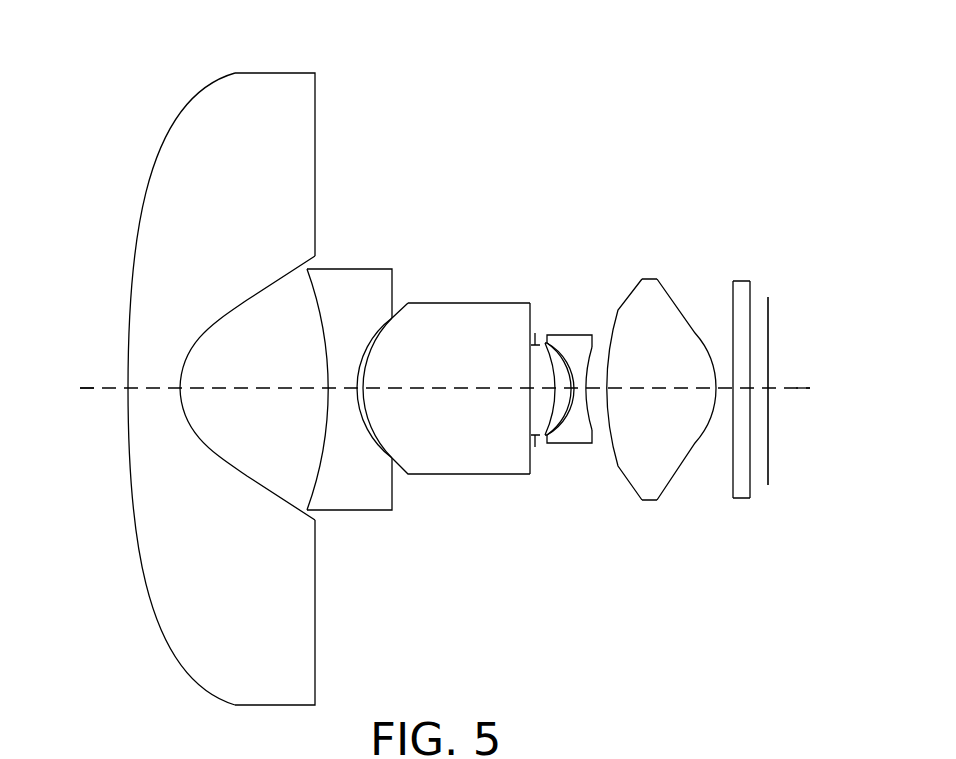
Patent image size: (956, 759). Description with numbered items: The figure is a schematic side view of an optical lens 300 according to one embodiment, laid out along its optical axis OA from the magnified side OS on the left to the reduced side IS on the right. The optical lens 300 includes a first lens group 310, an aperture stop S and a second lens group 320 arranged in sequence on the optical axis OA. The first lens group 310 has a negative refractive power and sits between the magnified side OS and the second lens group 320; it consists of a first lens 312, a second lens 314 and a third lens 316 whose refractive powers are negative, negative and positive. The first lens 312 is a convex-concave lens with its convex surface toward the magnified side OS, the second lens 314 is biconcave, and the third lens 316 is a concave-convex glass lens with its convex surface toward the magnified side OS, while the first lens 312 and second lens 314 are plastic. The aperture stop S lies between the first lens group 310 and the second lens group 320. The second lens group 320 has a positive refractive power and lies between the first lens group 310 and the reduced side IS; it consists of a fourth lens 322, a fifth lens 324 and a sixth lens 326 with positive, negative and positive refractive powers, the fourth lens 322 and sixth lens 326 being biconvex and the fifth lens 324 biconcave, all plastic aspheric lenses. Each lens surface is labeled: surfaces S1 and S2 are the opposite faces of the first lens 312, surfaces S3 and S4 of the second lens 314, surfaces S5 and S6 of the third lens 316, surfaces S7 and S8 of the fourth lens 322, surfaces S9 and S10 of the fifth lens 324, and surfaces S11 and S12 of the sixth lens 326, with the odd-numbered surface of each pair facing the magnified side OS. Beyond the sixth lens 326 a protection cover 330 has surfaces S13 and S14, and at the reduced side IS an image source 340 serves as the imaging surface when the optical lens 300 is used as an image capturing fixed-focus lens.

The optical lens 300 is at (835, 718).
The first lens group 310 is at (483, 650).
The first lens 312 is at (280, 567).
The second lens 314 is at (346, 494).
The third lens 316 is at (452, 458).
The second lens group 320 is at (665, 650).
The fourth lens 322 is at (547, 413).
The fifth lens 324 is at (578, 437).
The sixth lens 326 is at (653, 495).
The protection cover 330 is at (740, 492).
The image source 340 is at (768, 473).
The aperture stop S is at (533, 446).
The magnified side OS is at (73, 389).
The reduced side IS is at (816, 389).
The optical axis OA is at (93, 390).
The surface S1 is at (160, 151).
The surface S2 is at (252, 304).
The surface S3 is at (326, 366).
The surface S4 is at (368, 343).
The surface S5 is at (362, 380).
The surface S6 is at (533, 314).
The surface S7 is at (534, 380).
The surface S8 is at (570, 376).
The surface S9 is at (563, 356).
The surface S10 is at (590, 358).
The surface S11 is at (633, 297).
The surface S12 is at (681, 310).
The surface S13 is at (730, 315).
The surface S14 is at (753, 289).